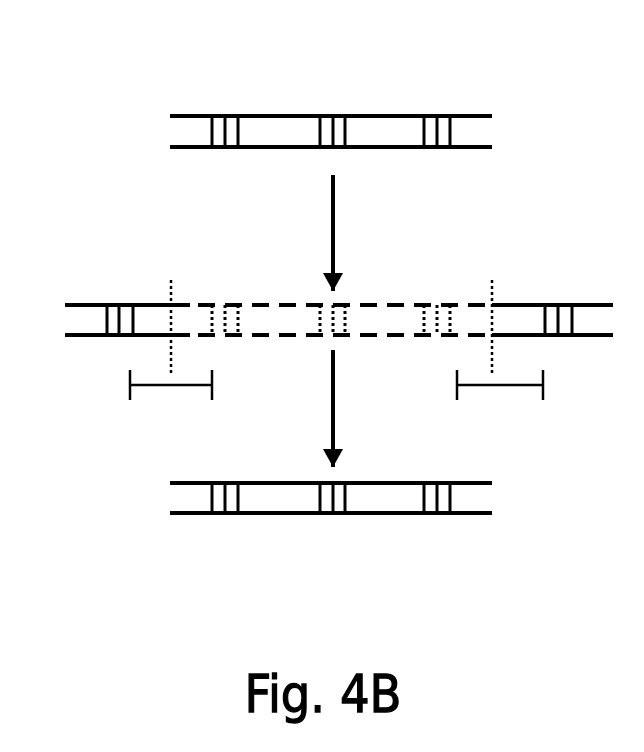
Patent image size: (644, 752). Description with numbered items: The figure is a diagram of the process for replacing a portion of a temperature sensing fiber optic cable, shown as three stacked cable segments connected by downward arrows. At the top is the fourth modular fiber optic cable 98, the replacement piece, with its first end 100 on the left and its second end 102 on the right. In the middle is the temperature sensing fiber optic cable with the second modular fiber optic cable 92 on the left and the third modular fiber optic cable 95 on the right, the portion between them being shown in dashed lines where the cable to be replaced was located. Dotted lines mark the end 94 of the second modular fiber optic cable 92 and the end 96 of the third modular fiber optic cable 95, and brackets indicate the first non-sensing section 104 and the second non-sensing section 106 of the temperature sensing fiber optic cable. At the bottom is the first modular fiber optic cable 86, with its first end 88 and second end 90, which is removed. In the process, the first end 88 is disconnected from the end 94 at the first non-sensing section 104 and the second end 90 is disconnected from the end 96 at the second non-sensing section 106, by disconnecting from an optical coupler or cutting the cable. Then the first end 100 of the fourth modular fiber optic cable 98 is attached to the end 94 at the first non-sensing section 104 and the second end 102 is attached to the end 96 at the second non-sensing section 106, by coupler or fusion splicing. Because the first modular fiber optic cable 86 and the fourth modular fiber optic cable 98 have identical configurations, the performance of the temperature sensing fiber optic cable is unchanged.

The first modular fiber optic cable 86 is at (288, 524).
The first end of first modular fiber optic cable 88 is at (168, 500).
The second end of first modular fiber optic cable 90 is at (500, 500).
The second modular fiber optic cable 92 is at (120, 295).
The end of second modular fiber optic cable 94 is at (158, 290).
The third modular fiber optic cable 95 is at (542, 292).
The end of third modular fiber optic cable 96 is at (500, 288).
The fourth modular fiber optic cable 98 is at (265, 109).
The first end of fourth modular fiber optic cable 100 is at (168, 132).
The second end of fourth modular fiber optic cable 102 is at (500, 132).
The first non-sensing section 104 is at (171, 397).
The second non-sensing section 106 is at (500, 398).